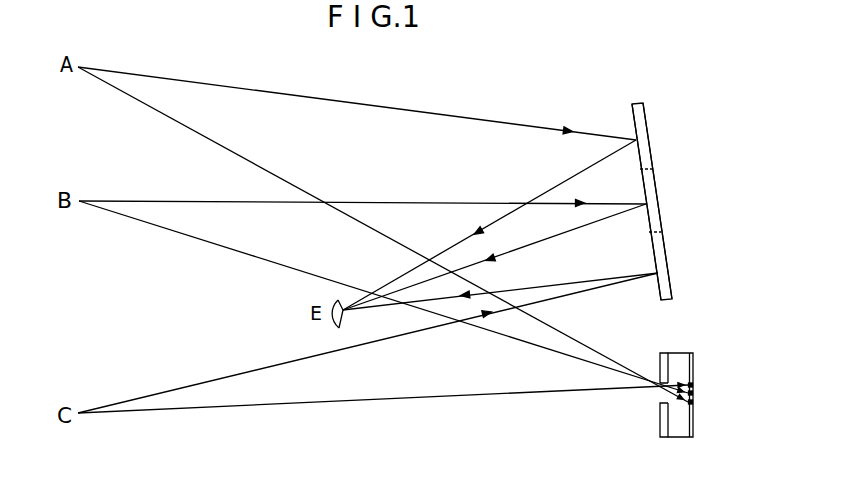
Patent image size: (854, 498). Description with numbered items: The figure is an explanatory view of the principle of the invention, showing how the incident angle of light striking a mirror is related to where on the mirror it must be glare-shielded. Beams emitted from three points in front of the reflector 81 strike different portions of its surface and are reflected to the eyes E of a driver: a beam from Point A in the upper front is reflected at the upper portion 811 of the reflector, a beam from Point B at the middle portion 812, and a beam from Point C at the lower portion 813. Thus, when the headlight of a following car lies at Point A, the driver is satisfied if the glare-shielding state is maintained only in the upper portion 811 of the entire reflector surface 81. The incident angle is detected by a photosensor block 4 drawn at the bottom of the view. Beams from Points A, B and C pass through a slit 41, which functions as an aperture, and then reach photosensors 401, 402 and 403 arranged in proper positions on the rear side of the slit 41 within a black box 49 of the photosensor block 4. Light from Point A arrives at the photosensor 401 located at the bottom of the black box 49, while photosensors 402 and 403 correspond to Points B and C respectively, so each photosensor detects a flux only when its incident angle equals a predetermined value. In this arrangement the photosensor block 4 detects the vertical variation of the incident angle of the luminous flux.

The reflector 81 is at (683, 168).
The upper portion of the reflector 811 is at (643, 130).
The middle portion of the reflector 812 is at (655, 190).
The lower portion of the reflector 813 is at (662, 260).
The photosensor block 4 is at (683, 420).
The slit 41 is at (662, 398).
The black box 49 is at (675, 438).
The photosensor 401 is at (693, 405).
The photosensor 402 is at (693, 393).
The photosensor 403 is at (692, 385).